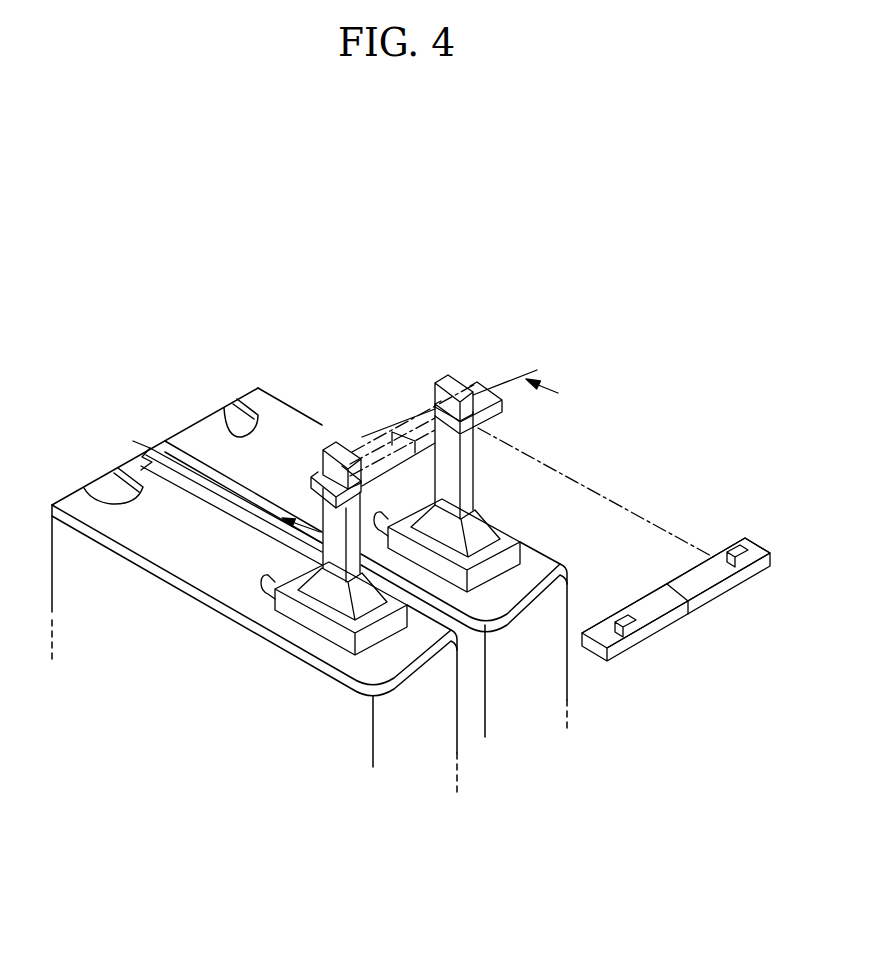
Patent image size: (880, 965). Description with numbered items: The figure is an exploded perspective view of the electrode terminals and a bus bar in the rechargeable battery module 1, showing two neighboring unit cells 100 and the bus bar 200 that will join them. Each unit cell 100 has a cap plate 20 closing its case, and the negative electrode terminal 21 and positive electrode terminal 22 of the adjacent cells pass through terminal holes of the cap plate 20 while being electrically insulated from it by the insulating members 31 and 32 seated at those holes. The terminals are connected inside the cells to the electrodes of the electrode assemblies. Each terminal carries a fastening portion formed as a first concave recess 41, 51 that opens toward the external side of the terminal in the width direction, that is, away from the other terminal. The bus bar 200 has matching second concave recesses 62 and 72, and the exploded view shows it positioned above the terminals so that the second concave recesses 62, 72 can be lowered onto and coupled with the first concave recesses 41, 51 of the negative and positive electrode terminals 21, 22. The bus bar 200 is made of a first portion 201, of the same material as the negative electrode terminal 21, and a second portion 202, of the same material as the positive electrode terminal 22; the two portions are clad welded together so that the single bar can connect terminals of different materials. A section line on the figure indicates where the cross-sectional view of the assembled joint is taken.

The rechargeable battery module 1 is at (364, 234).
The unit cell 100 is at (428, 740).
The cap plate 20 is at (253, 457).
The negative electrode terminal 21 is at (452, 378).
The positive electrode terminal 22 is at (335, 444).
The insulating member 31 is at (503, 560).
The insulating member 32 is at (333, 632).
The first concave recess 41 is at (433, 405).
The first concave recess 51 is at (321, 476).
The bus bar 200 is at (477, 422).
The first portion 201 is at (708, 582).
The second portion 202 is at (645, 620).
The second concave recess 62 is at (732, 553).
The second concave recess 72 is at (620, 625).